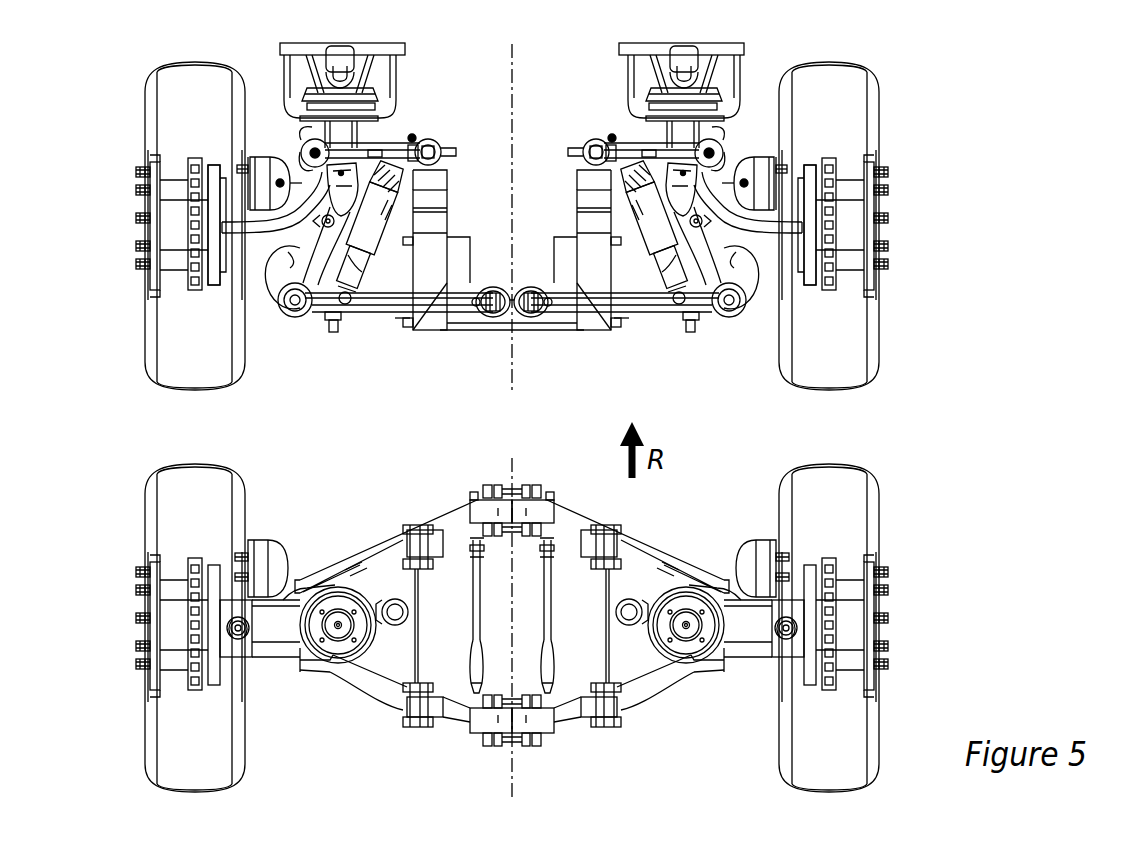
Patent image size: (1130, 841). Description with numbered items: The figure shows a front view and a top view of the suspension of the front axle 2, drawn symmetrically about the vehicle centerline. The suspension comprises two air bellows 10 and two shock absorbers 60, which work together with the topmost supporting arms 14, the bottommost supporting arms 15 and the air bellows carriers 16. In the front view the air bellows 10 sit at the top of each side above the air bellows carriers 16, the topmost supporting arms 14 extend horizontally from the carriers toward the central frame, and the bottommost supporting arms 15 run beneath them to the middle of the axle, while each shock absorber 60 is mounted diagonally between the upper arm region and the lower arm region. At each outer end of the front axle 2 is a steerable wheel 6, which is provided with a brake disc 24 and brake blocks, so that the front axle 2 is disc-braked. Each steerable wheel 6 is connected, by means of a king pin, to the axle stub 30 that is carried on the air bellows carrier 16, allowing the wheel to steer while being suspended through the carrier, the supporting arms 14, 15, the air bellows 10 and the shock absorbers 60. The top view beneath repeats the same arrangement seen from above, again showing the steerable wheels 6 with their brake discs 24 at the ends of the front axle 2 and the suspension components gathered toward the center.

The front axle 2 is at (467, 430).
The steerable wheels 6 is at (512, 427).
The air bellows 10 is at (512, 389).
The topmost supporting arms 14 is at (512, 127).
The bottommost supporting arms 15 is at (512, 335).
The air bellows carriers 16 is at (512, 252).
The brake disc 24 is at (512, 434).
The axle stub 30 is at (512, 259).
The shock absorbers 60 is at (512, 232).